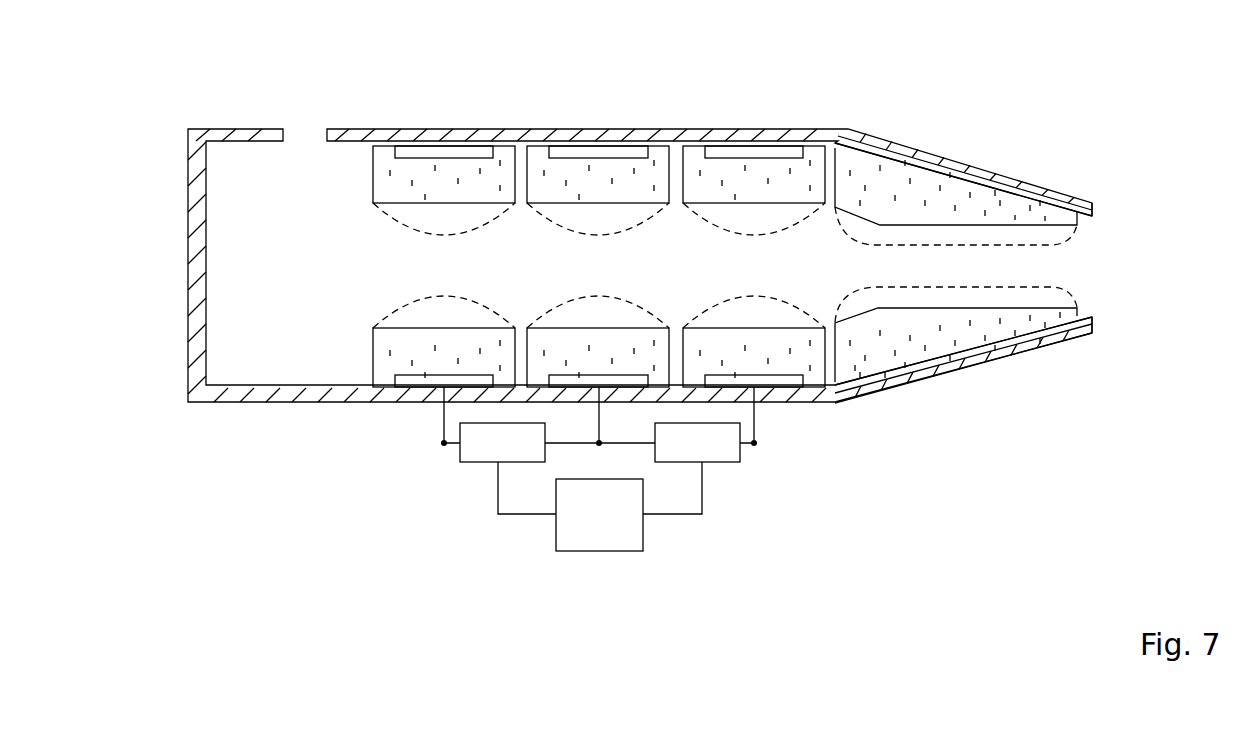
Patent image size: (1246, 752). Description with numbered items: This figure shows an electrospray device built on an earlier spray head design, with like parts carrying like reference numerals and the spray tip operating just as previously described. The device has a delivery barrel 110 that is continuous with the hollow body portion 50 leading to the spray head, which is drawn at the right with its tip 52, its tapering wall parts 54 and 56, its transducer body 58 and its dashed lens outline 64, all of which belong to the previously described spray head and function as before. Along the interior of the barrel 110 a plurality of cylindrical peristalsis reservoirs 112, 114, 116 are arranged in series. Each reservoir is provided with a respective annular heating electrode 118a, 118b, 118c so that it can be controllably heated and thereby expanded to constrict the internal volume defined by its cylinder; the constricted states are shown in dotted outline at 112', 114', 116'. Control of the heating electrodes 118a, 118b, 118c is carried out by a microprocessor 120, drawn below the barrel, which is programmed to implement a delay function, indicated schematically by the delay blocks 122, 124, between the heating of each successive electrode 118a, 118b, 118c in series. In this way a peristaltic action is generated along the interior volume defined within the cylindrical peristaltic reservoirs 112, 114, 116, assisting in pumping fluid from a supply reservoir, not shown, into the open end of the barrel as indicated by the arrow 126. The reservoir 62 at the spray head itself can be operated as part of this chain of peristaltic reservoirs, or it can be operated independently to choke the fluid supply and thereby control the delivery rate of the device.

The hollow body portion 50 is at (905, 150).
The distal tip 52 is at (1093, 210).
The outer wall layer 54 is at (972, 370).
The matching layer 56 is at (1000, 186).
The transducer element 58 is at (878, 348).
The reservoir 62 is at (870, 312).
The upper transducer lens 64 is at (868, 245).
The delivery barrel 110 is at (290, 402).
The peristalsis reservoir 112 is at (444, 266).
The constricted peristalsis reservoir outline 112' is at (444, 265).
The peristalsis reservoir 114 is at (598, 266).
The constricted peristalsis reservoir outline 114' is at (598, 265).
The peristalsis reservoir 116 is at (746, 266).
The constricted peristalsis reservoir outline 116' is at (754, 265).
The annular heating electrode 118a is at (473, 150).
The annular heating electrode 118b is at (596, 150).
The annular heating electrode 118c is at (756, 150).
The microprocessor 120 is at (594, 552).
The delay function 122 is at (475, 463).
The delay function 124 is at (715, 463).
The arrow 126 is at (308, 104).